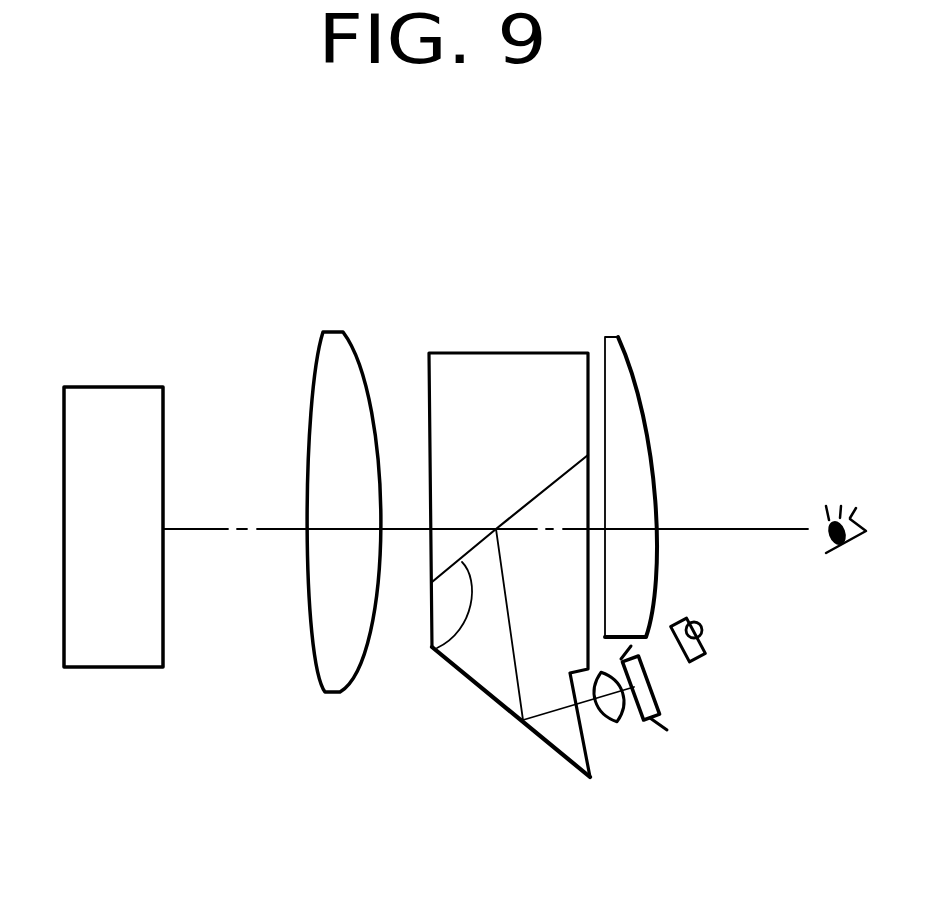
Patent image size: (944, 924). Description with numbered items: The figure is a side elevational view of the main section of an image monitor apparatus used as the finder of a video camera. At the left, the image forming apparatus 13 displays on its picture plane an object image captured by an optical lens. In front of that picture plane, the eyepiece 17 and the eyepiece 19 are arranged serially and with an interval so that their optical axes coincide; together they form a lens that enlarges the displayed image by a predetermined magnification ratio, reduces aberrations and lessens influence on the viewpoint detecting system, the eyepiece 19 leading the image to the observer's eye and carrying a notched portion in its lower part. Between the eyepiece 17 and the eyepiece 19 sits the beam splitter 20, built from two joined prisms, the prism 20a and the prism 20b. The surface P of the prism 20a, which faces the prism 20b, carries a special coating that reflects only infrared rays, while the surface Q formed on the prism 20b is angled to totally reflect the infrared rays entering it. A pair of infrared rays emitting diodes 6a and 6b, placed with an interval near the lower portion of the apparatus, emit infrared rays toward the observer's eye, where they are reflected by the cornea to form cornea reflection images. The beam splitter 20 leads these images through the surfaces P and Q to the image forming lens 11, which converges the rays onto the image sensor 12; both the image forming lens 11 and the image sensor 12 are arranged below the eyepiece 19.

The image forming apparatus 13 is at (140, 387).
The eyepiece 17 is at (345, 337).
The beam splitter 20 is at (519, 509).
The prism 20a is at (536, 363).
The prism 20b is at (492, 672).
The eyepiece 19 is at (637, 375).
The image forming lens 11 is at (618, 720).
The image sensor 12 is at (657, 680).
The infrared rays emitting diode 6a is at (705, 640).
The infrared rays emitting diode 6b is at (700, 617).
The surface P is at (440, 653).
The surface Q is at (538, 740).